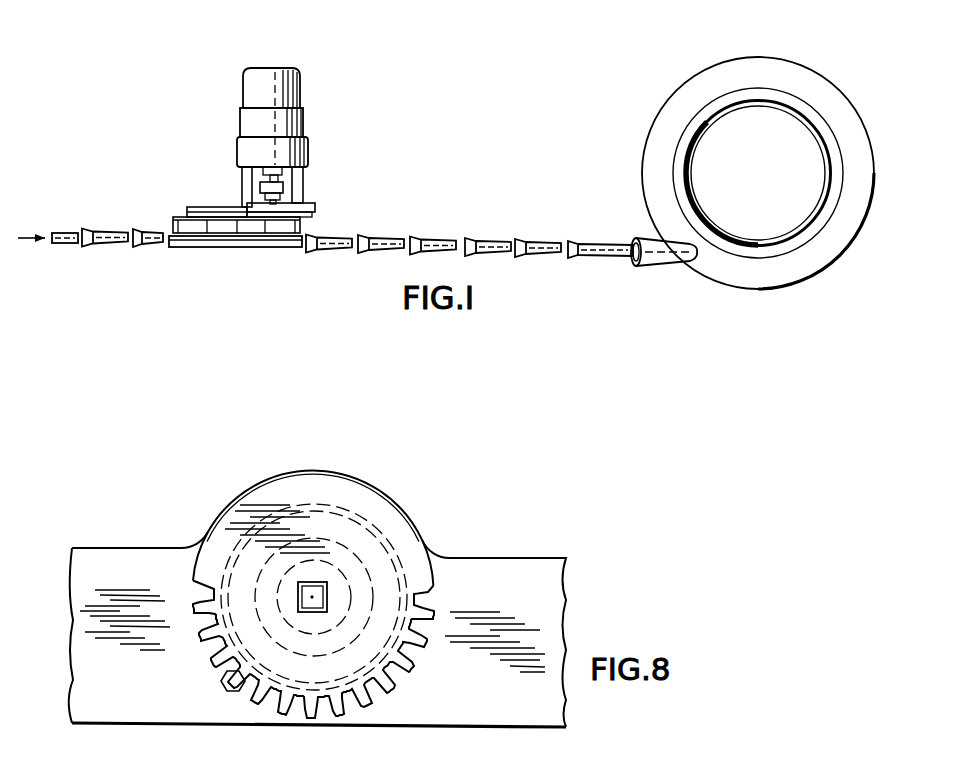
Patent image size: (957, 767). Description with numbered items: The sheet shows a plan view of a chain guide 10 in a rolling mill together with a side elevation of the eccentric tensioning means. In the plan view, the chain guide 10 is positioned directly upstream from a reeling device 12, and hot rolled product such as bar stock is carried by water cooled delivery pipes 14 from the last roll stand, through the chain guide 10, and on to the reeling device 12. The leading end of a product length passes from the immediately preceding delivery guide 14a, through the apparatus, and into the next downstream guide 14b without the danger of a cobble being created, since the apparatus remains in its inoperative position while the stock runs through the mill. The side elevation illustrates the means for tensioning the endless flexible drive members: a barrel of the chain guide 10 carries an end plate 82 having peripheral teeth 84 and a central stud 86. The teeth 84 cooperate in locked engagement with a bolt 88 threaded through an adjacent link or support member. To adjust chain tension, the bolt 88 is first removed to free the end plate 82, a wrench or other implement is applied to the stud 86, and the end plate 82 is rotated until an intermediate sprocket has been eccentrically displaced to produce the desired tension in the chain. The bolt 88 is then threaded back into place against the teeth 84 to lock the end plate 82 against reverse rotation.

In FIG. 1, the chain guide 10 is at (322, 146).
In FIG. 1, the reeling device 12 is at (806, 58).
In FIG. 1, the water cooled delivery pipes 14 is at (485, 243).
In FIG. 1, the delivery guide 14a is at (152, 244).
In FIG. 1, the downstream guide 14b is at (320, 247).
In FIG. 8, the end plate 82 is at (390, 530).
In FIG. 8, the peripheral teeth 84 is at (368, 700).
In FIG. 8, the central stud 86 is at (317, 588).
In FIG. 8, the bolt 88 is at (230, 680).